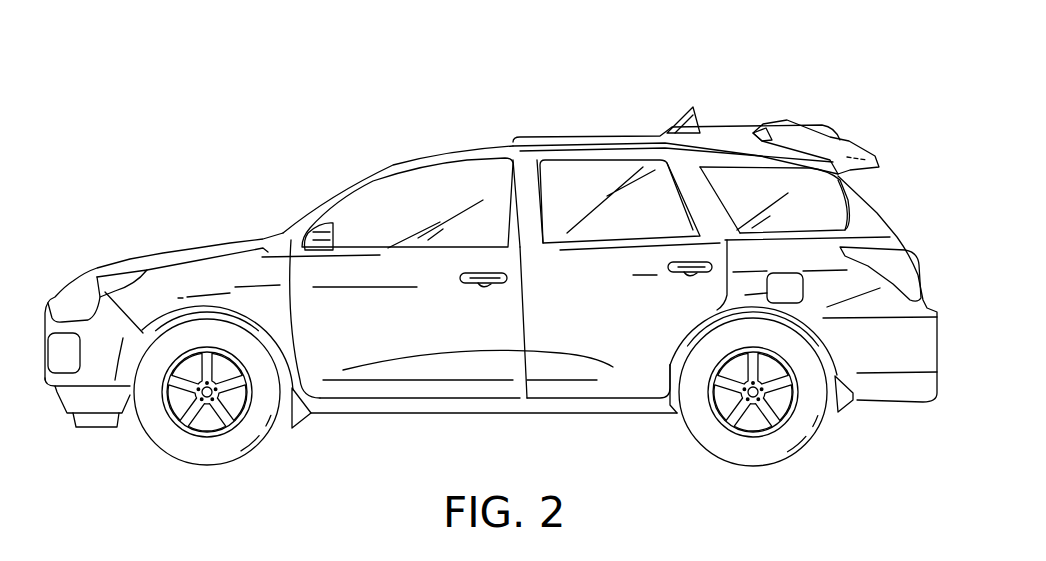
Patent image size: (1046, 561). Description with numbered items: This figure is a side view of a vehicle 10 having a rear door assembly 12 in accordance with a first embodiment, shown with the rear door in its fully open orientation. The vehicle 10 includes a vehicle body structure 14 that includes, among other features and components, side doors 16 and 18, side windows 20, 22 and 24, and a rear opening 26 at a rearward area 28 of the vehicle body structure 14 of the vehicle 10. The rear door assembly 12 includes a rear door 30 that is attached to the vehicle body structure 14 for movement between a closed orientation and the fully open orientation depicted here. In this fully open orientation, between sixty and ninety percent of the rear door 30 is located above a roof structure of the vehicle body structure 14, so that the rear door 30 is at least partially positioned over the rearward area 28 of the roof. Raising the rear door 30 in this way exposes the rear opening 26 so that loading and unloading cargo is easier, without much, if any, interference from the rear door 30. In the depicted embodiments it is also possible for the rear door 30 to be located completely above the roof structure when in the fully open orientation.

The vehicle 10 is at (470, 75).
The rear door assembly 12 is at (813, 123).
The vehicle body structure 14 is at (380, 175).
The side door 16 is at (417, 337).
The side door 18 is at (610, 327).
The side window 20 is at (452, 190).
The side window 22 is at (598, 185).
The side window 24 is at (741, 193).
The rear opening 26 is at (878, 217).
The rearward area 28 is at (847, 203).
The rear door 30 is at (768, 128).